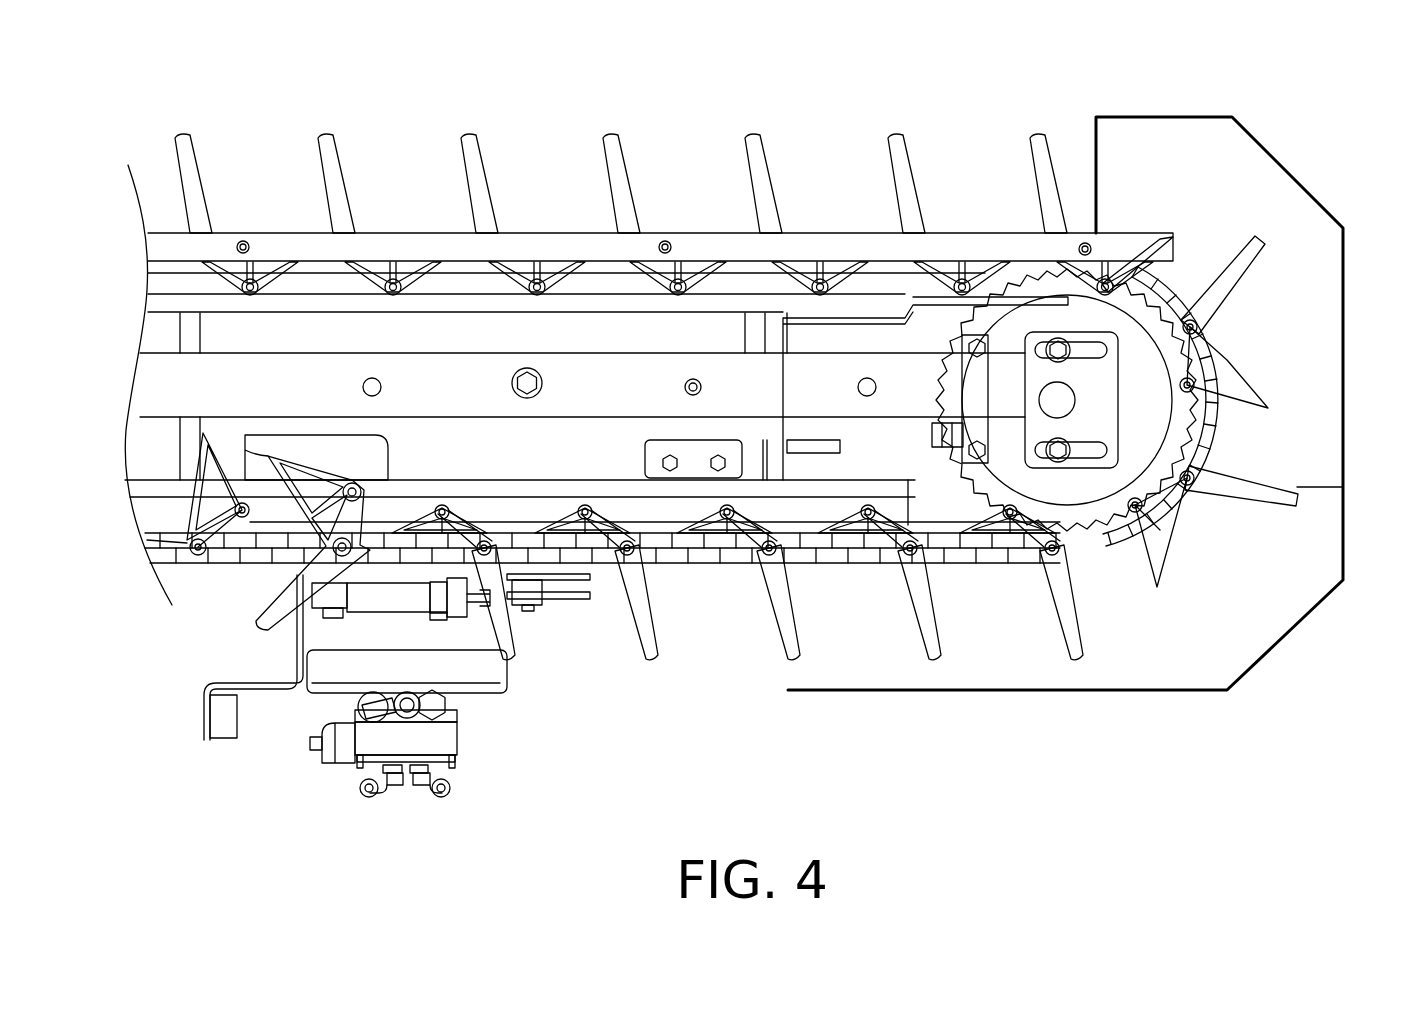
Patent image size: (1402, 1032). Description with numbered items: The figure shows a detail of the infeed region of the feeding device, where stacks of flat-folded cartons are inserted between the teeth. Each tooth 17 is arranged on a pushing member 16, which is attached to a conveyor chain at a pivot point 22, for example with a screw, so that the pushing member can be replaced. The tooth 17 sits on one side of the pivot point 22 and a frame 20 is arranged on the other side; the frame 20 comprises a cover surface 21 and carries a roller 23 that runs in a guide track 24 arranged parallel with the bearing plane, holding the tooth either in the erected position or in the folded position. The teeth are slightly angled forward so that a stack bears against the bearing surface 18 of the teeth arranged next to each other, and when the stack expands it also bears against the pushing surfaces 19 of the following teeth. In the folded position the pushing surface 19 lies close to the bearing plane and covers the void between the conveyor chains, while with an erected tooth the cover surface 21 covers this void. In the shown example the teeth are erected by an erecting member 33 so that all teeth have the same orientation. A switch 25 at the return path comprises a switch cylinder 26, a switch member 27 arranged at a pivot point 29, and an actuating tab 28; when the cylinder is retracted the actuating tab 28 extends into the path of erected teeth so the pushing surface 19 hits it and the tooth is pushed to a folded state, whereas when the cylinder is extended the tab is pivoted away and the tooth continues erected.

The pushing member 16 is at (882, 618).
The tooth 17 is at (895, 138).
The bearing surface 18 is at (908, 166).
The pushing surface 19 is at (890, 168).
The frame 20 is at (857, 552).
The cover surface 21 is at (1146, 235).
The pivot point 22 is at (933, 613).
The roller 23 is at (868, 520).
The guide track 24 is at (748, 284).
The switch 25 is at (362, 625).
The switch cylinder 26 is at (393, 598).
The switch member 27 is at (545, 596).
The actuating tab 28 is at (555, 580).
The pivot point 29 is at (532, 604).
The erecting member 33 is at (347, 455).